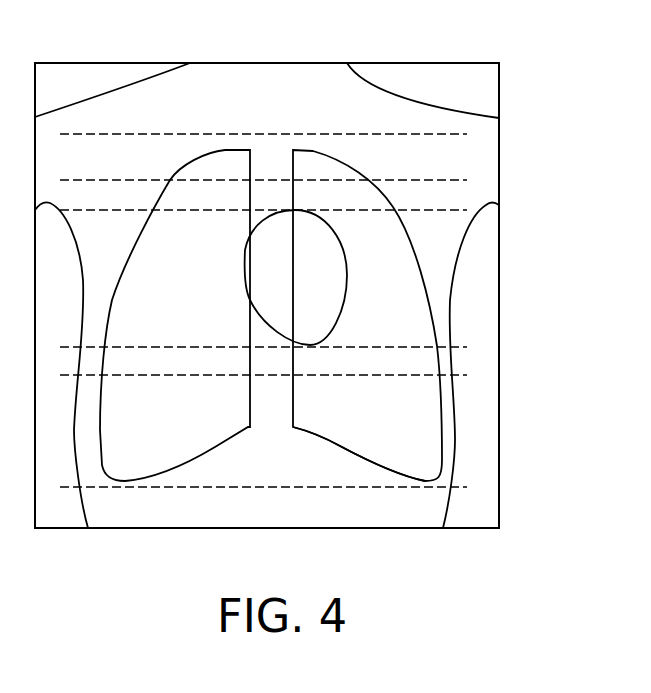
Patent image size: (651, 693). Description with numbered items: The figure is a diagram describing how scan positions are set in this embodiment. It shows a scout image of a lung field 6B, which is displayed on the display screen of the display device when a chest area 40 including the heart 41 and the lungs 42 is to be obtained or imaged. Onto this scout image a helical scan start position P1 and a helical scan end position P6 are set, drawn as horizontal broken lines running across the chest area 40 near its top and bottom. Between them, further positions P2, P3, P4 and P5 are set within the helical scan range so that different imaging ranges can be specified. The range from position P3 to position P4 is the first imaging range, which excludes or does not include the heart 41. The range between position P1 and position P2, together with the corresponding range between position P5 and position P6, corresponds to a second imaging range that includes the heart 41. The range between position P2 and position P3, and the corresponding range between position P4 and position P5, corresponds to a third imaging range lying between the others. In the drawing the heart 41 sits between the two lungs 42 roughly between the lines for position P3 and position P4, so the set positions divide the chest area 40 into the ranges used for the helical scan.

The scout image of a lung field 6B is at (427, 63).
The chest area 40 is at (423, 413).
The heart 41 is at (347, 260).
The lungs 42 is at (311, 428).
The helical scan start position P1 is at (455, 134).
The position P2 is at (455, 180).
The position P3 is at (455, 210).
The position P4 is at (455, 347).
The position P5 is at (455, 375).
The helical scan end position P6 is at (455, 487).